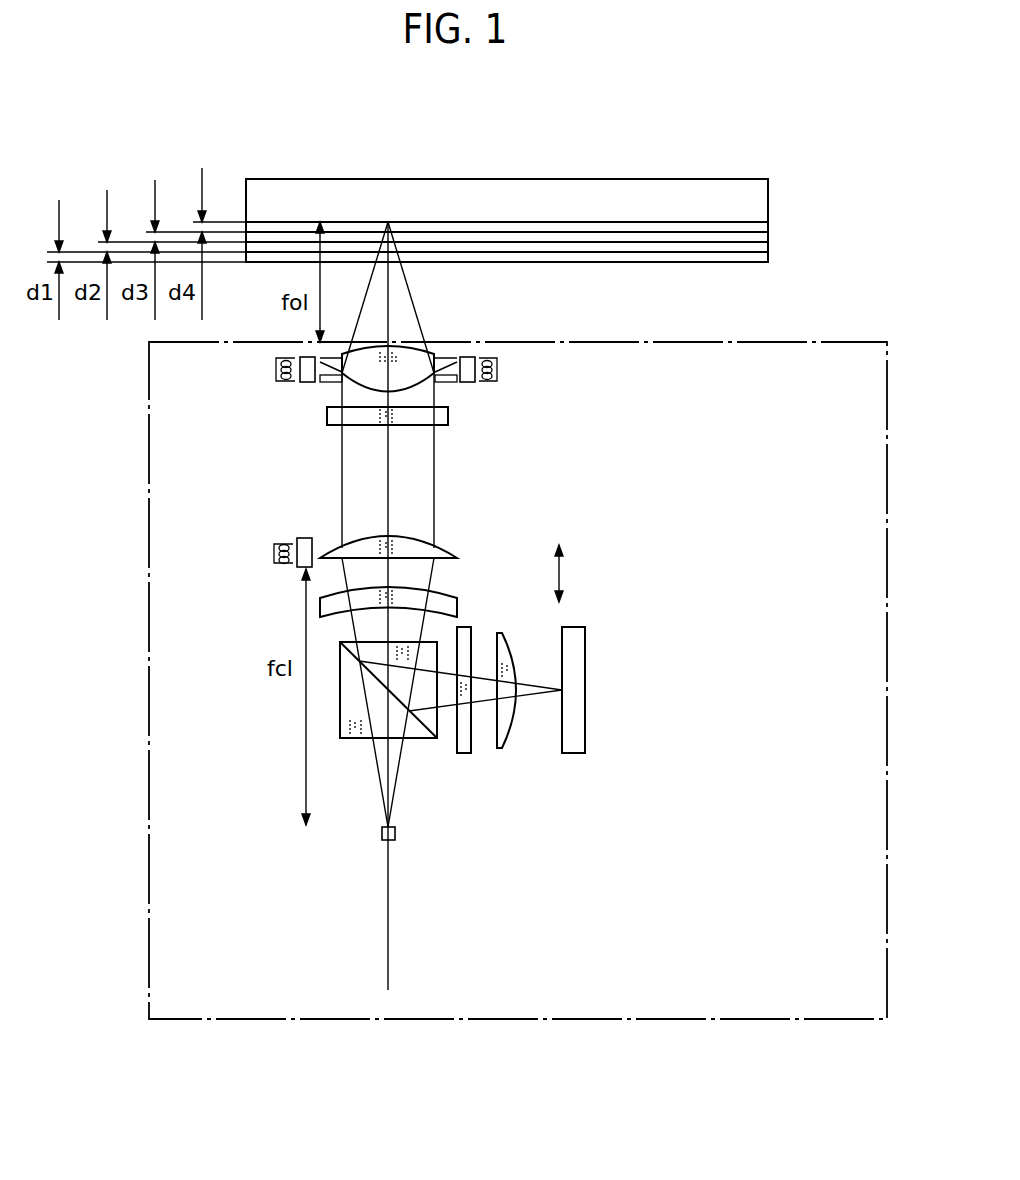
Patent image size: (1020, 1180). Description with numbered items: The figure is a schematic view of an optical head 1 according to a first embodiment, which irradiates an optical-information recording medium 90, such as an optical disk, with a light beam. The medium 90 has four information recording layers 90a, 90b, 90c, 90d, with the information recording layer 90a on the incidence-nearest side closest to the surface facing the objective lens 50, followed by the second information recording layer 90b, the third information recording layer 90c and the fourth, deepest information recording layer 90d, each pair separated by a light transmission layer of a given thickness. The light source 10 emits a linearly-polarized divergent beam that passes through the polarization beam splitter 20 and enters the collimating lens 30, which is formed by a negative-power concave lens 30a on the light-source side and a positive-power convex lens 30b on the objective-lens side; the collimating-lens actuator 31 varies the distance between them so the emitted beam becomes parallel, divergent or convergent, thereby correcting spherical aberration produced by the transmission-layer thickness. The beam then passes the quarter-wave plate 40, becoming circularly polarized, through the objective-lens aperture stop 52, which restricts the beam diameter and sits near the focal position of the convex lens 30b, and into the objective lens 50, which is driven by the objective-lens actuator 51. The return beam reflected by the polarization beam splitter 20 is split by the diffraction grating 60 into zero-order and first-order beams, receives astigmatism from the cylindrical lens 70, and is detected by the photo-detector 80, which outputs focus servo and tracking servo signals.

The optical head 1 is at (843, 340).
The light source 10 is at (382, 836).
The polarization beam splitter 20 is at (340, 703).
The collimating lens 30 is at (487, 575).
The concave lens 30a is at (457, 607).
The convex lens 30b is at (457, 557).
The collimating-lens actuator 31 is at (273, 553).
The quarter-wave plate 40 is at (327, 416).
The objective lens 50 is at (438, 349).
The objective-lens actuator 51 is at (278, 367).
The objective-lens aperture stop 52 is at (322, 380).
The diffraction grating 60 is at (463, 753).
The cylindrical lens 70 is at (500, 748).
The photo-detector 80 is at (573, 753).
The optical-information recording medium 90 is at (552, 246).
The information recording layer on the incidence-nearest side 90a is at (765, 248).
The second information recording layer 90b is at (765, 238).
The third information recording layer 90c is at (765, 229).
The fourth information recording layer 90d is at (765, 219).